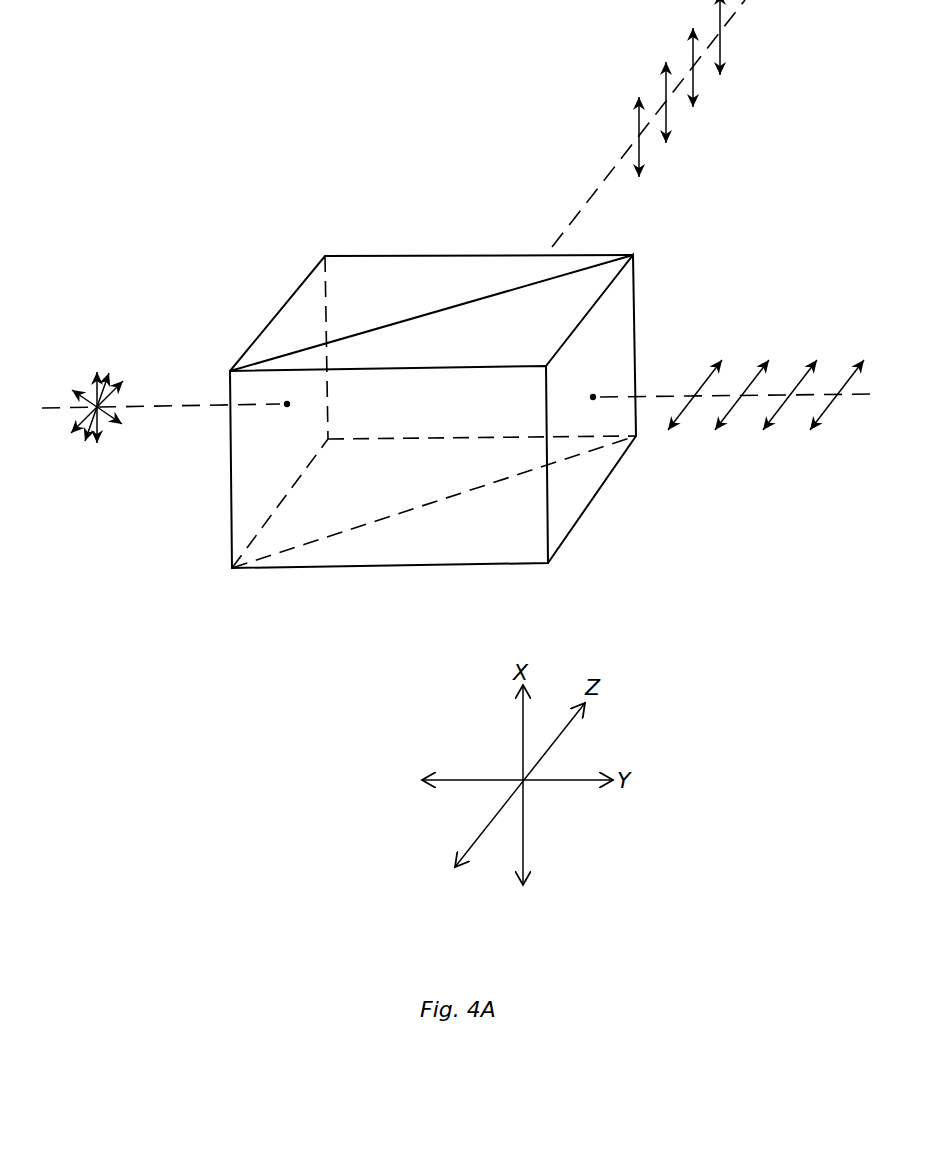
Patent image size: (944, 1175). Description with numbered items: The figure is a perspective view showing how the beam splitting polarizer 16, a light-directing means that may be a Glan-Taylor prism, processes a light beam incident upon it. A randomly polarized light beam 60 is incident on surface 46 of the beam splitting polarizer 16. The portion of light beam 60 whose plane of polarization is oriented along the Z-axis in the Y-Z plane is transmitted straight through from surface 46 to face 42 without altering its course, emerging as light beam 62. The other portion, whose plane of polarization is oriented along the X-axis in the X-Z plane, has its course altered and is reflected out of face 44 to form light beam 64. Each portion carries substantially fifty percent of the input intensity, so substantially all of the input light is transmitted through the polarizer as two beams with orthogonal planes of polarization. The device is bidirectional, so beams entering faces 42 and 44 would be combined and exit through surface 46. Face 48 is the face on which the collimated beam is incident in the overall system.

The beam splitting polarizer 16 is at (387, 228).
The face 42 is at (597, 468).
The face 44 is at (590, 280).
The surface 46 is at (298, 320).
The face 48 is at (240, 509).
The randomly polarized light beam 60 is at (187, 408).
The light beam 62 is at (862, 396).
The light beam 64 is at (740, 0).